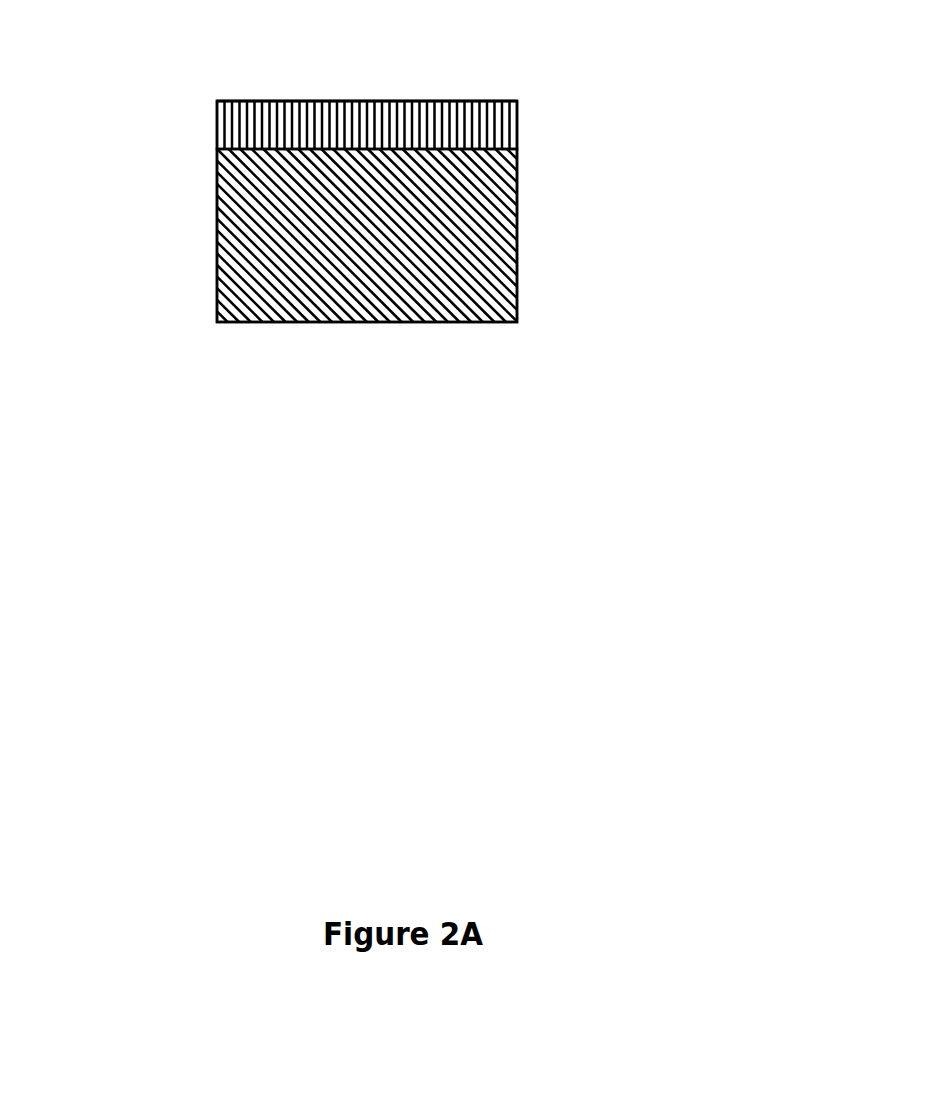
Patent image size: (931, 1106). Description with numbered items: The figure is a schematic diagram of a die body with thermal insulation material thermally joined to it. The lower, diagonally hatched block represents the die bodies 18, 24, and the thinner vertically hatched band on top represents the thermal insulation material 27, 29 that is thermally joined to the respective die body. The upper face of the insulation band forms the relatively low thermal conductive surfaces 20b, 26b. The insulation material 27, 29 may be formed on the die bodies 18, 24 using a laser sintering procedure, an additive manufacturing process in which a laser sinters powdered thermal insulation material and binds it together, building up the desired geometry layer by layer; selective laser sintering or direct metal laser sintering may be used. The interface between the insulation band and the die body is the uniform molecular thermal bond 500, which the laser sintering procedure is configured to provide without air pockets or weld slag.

The uniform molecular thermal bond 500 is at (410, 191).
The relatively low thermal conductive surface 20b is at (367, 58).
The relatively low thermal conductive surface 26b is at (352, 100).
The thermal insulation material 27 is at (502, 110).
The thermal insulation material 29 is at (518, 126).
The die body 18 is at (502, 258).
The die body 24 is at (518, 238).